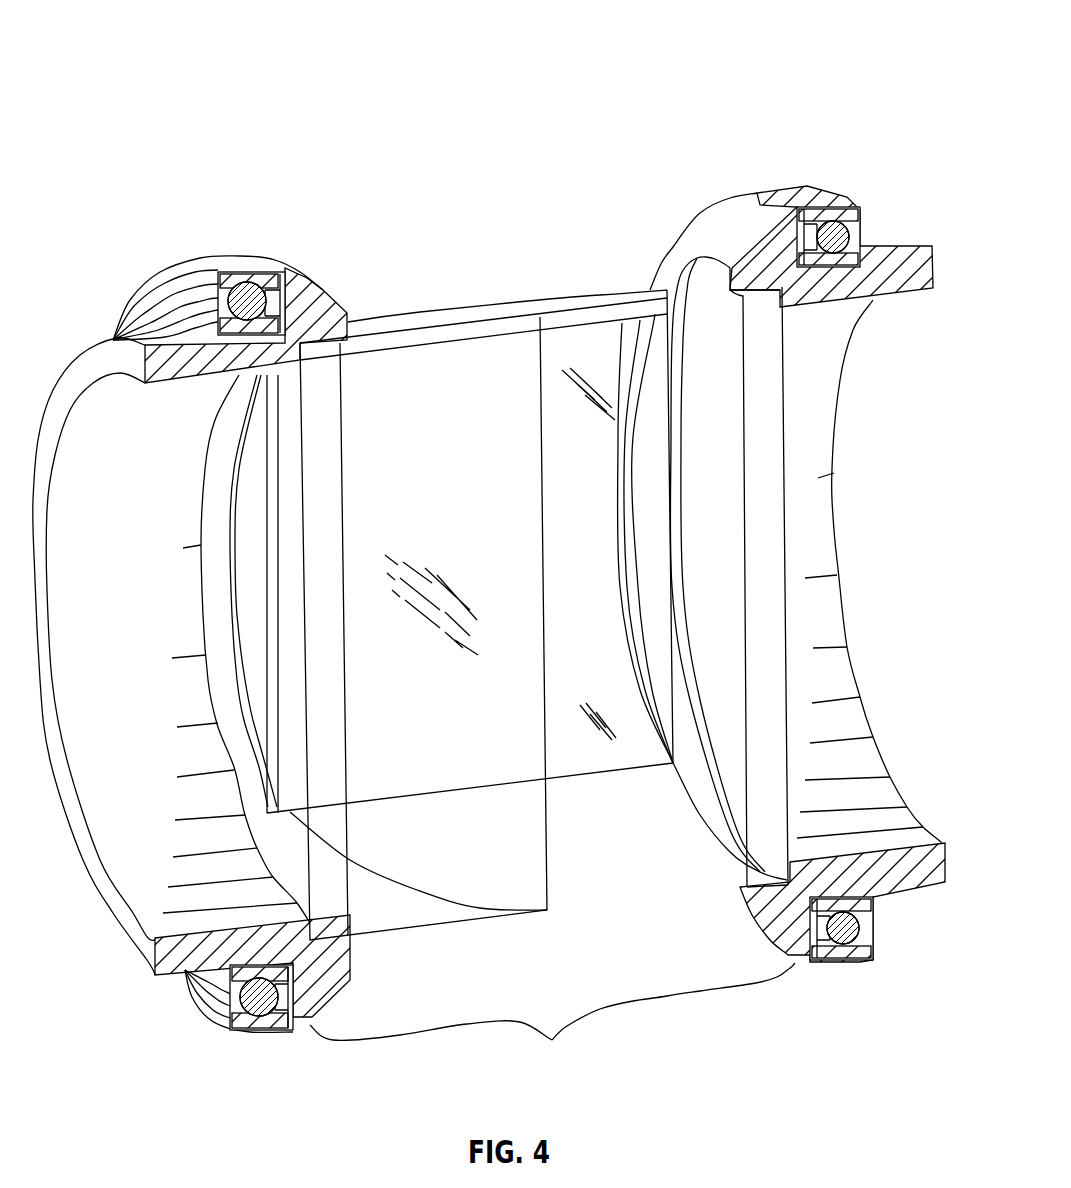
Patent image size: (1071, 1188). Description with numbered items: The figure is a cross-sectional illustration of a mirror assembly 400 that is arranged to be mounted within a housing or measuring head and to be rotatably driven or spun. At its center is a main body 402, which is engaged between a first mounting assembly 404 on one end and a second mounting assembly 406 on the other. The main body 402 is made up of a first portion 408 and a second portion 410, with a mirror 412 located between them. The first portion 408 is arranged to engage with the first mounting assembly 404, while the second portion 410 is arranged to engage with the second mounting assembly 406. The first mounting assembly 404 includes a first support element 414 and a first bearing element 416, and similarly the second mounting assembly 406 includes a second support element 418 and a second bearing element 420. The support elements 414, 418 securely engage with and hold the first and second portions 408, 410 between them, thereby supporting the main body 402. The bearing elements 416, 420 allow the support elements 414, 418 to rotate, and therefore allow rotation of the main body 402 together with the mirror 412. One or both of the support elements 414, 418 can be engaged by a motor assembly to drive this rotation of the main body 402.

The mirror assembly 400 is at (858, 52).
The main body 402 is at (604, 635).
The first mounting assembly 404 is at (255, 1043).
The second mounting assembly 406 is at (855, 986).
The first portion 408 is at (418, 357).
The second portion 410 is at (610, 320).
The mirror 412 is at (508, 304).
The first support element 414 is at (310, 285).
The first bearing element 416 is at (180, 262).
The second support element 418 is at (768, 247).
The second bearing element 420 is at (807, 190).